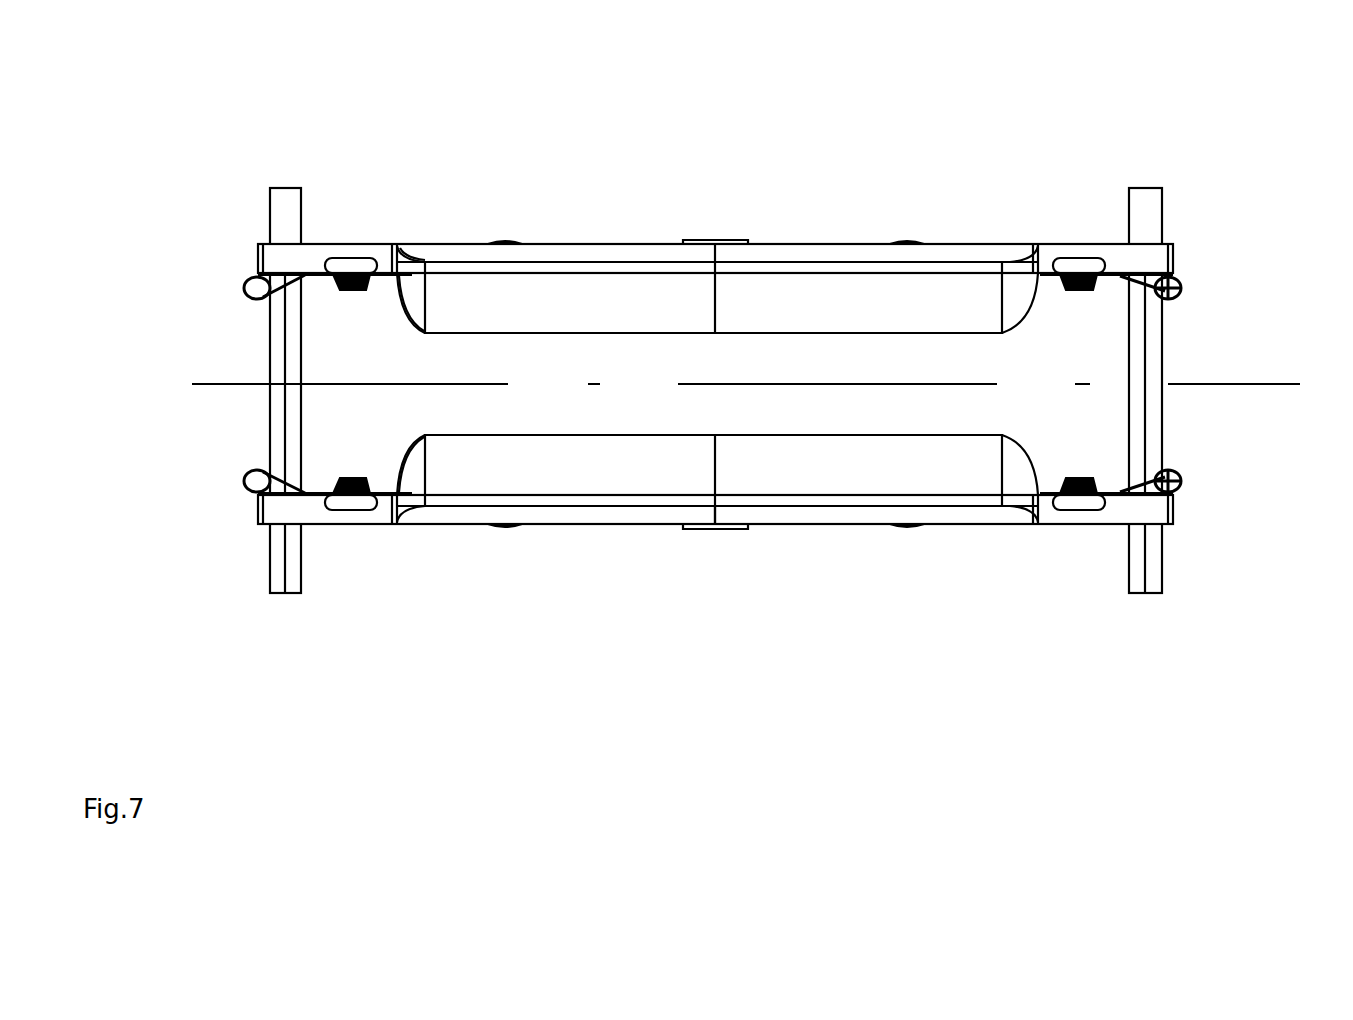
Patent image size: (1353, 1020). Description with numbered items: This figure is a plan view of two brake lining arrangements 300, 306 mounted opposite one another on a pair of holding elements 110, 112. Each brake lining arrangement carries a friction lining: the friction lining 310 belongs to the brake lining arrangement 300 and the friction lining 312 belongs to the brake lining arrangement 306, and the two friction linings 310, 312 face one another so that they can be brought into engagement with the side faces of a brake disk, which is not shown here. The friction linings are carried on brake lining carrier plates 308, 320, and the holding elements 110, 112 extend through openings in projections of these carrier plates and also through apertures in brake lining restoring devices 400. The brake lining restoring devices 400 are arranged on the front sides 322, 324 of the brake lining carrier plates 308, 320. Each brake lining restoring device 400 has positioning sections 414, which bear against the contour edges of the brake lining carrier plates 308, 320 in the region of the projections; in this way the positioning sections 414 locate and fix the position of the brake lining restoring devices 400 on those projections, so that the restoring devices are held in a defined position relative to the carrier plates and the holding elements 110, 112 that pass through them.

The holding element 110 is at (285, 200).
The holding element 112 is at (1147, 200).
The brake lining arrangement 300 is at (752, 582).
The brake lining arrangement 306 is at (660, 195).
The brake lining carrier plate 308 is at (526, 526).
The friction lining 310 is at (630, 450).
The friction lining 312 is at (548, 300).
The brake lining carrier plate 320 is at (478, 255).
The front side 322 is at (403, 465).
The front side 324 is at (395, 275).
The brake lining restoring device 400 is at (228, 296).
The positioning section 414 is at (360, 264).